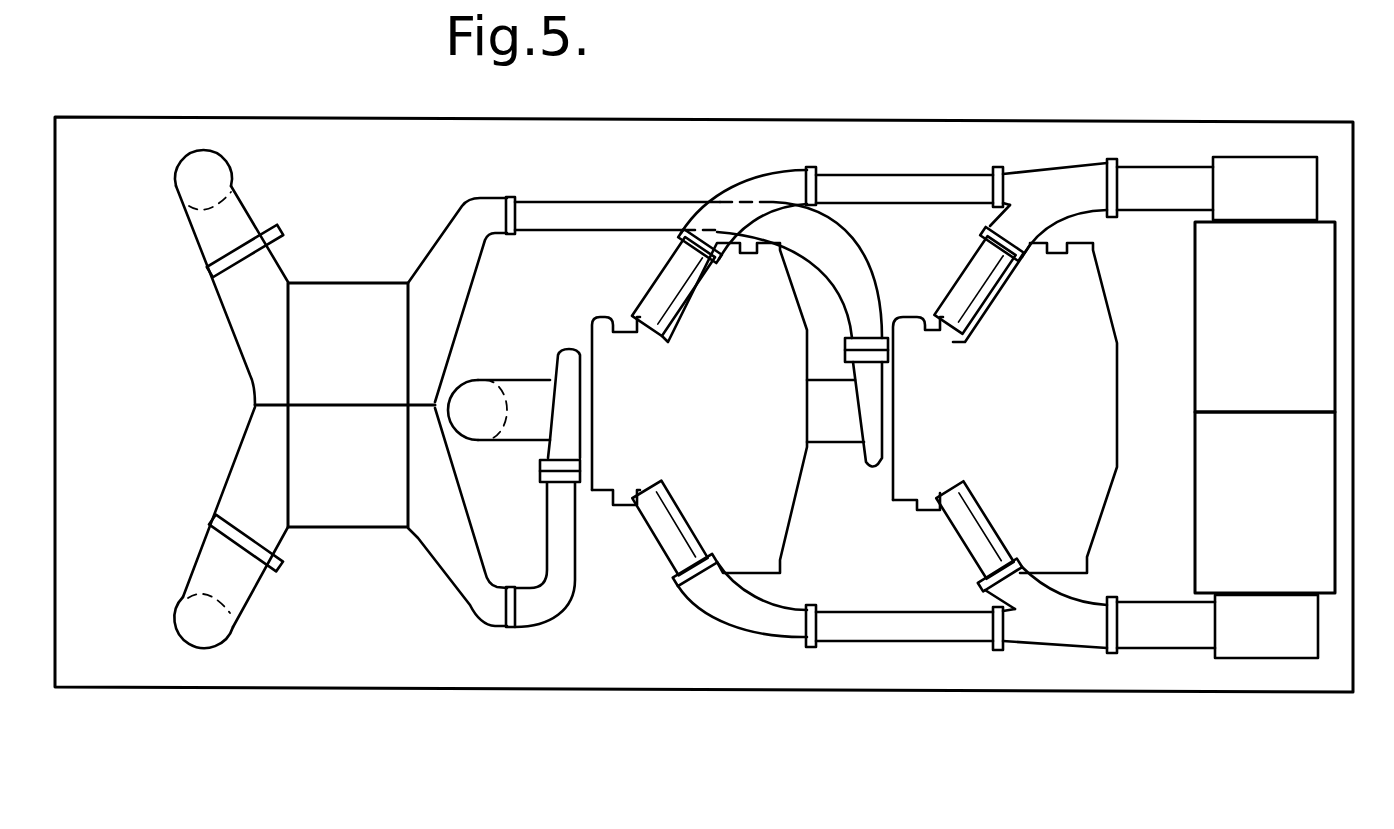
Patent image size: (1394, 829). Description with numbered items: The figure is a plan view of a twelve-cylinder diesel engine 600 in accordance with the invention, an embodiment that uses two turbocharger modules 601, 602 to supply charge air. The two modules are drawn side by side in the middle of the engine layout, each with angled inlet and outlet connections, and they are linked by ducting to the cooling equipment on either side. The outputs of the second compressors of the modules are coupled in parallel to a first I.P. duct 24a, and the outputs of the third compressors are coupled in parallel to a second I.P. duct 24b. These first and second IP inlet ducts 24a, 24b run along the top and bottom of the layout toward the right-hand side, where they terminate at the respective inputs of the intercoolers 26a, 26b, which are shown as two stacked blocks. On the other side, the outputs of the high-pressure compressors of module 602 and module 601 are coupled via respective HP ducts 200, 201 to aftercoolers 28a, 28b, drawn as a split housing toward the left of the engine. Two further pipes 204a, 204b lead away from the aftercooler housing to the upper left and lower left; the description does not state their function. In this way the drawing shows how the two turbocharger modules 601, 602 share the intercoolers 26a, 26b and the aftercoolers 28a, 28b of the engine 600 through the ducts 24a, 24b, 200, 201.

The 12 cylinder engine 600 is at (874, 97).
The HP duct 200 is at (622, 202).
The HP duct 201 is at (925, 622).
The first inlet pipe 204a is at (207, 233).
The second inlet pipe 204b is at (217, 567).
The aftercooler 28a is at (376, 351).
The aftercooler 28b is at (376, 483).
The turbocharger module 601 is at (735, 430).
The turbocharger module 602 is at (1055, 430).
The first I.P. duct 24a is at (1153, 180).
The second I.P. duct 24b is at (1158, 623).
The intercooler 26a is at (1291, 335).
The intercooler 26b is at (1286, 511).